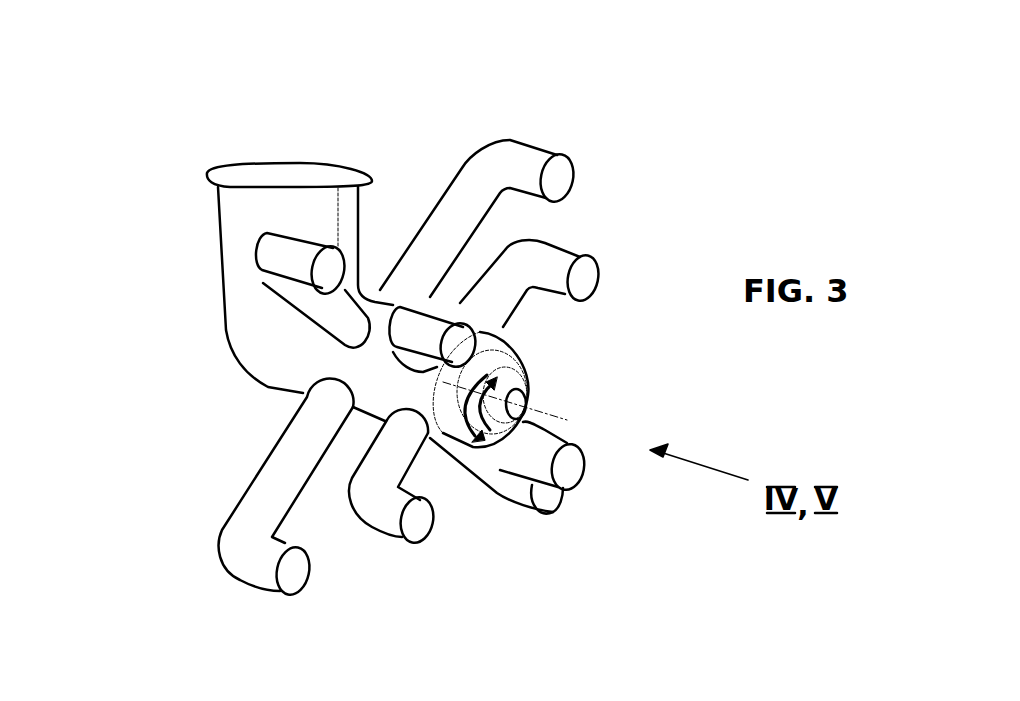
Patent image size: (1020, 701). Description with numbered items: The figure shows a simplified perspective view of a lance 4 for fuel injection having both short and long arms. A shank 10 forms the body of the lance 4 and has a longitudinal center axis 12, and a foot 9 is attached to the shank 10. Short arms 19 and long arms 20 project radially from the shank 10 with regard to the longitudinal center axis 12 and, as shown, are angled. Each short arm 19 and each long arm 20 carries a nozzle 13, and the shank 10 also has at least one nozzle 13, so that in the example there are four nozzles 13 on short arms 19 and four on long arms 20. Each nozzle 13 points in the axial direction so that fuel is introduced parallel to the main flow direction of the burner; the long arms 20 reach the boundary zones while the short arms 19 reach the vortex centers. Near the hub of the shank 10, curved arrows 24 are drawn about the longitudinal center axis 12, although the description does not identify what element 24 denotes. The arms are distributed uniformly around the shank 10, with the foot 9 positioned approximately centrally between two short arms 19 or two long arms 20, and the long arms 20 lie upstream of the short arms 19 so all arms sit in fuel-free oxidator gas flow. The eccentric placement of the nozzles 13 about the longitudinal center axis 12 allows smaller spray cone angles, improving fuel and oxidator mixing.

The lance 4 is at (188, 362).
The foot 9 is at (240, 224).
The shank 10 is at (321, 367).
The longitudinal center axis 12 is at (493, 450).
The nozzle 13 is at (585, 276).
The short arm 19 is at (551, 265).
The long arm 20 is at (528, 166).
The rotation direction arrows 24 is at (490, 380).